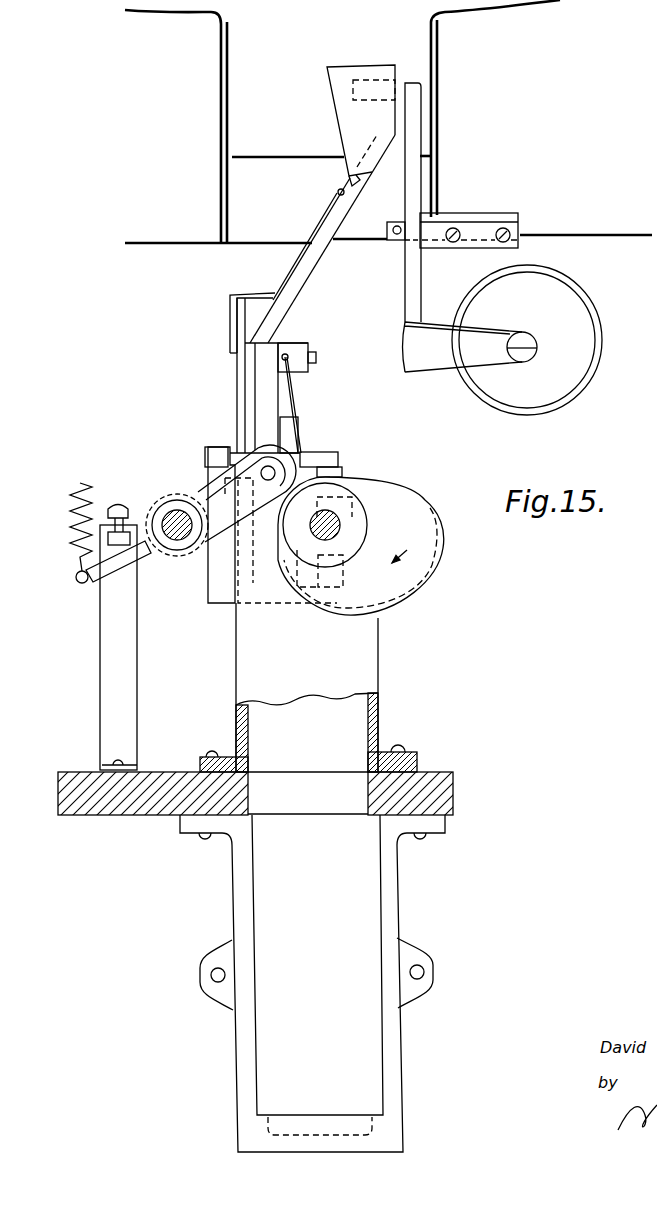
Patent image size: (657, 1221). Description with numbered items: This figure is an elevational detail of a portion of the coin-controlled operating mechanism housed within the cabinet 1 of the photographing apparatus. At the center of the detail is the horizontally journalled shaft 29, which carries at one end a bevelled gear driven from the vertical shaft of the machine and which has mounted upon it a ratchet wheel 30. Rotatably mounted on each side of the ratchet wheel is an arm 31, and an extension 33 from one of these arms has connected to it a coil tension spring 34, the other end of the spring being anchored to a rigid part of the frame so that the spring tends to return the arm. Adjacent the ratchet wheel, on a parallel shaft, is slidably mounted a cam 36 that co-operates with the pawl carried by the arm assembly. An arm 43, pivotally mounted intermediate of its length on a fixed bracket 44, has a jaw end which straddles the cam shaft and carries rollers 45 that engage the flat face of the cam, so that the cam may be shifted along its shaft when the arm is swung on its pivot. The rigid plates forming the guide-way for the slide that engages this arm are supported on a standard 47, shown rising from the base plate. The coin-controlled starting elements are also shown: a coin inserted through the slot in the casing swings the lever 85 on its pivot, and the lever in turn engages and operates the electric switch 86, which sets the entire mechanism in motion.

The cabinet 1 is at (594, 245).
The horizontally journalled shaft 29 is at (163, 518).
The ratchet wheel 30 is at (162, 556).
The arm 31 is at (217, 490).
The extension 33 is at (86, 585).
The coil tension spring 34 is at (68, 530).
The cam 36 is at (408, 501).
The arm 43 is at (312, 457).
The fixed bracket 44 is at (216, 565).
The rollers 45 is at (358, 498).
The standard 47 is at (372, 646).
The lever 85 is at (405, 282).
The electric switch 86 is at (582, 354).